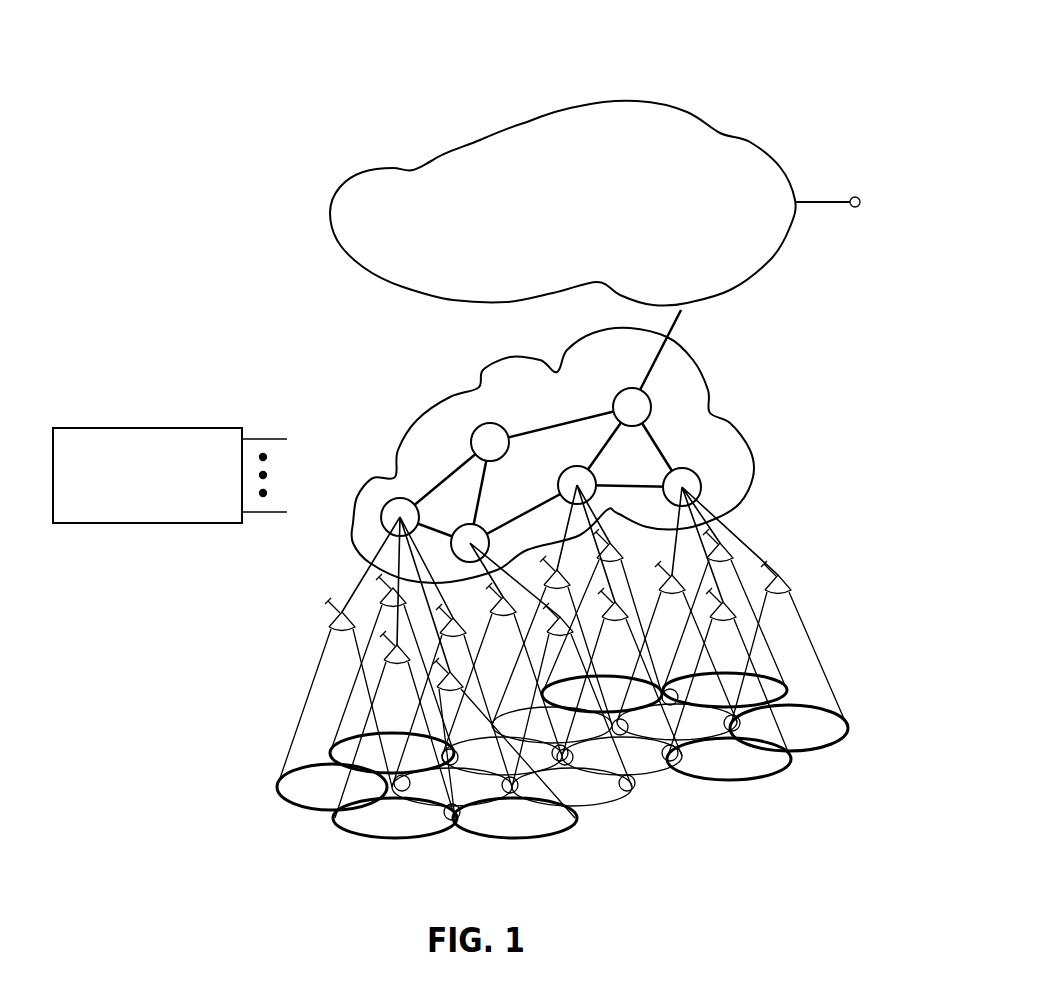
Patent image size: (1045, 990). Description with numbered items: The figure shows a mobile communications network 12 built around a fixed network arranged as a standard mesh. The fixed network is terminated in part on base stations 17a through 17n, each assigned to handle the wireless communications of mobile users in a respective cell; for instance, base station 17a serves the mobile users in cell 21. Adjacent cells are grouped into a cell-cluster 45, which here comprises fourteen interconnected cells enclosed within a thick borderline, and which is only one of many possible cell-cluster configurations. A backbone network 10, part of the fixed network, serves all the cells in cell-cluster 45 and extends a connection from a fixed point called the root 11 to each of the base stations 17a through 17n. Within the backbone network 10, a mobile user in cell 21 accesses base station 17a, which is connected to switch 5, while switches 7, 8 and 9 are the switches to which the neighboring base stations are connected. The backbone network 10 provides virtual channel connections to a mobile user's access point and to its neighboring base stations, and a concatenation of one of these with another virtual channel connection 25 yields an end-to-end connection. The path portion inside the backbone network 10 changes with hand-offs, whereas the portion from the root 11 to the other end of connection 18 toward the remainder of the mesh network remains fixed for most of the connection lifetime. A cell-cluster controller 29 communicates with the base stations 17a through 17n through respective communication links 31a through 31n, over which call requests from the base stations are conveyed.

The mobile communications network 12 is at (483, 37).
The connection 18 is at (850, 197).
The virtual channel connection 25 is at (818, 206).
The backbone network 10 is at (482, 378).
The root 11 is at (626, 387).
The switch 5 is at (406, 497).
The switch 7 is at (484, 527).
The switch 8 is at (577, 465).
The switch 9 is at (701, 484).
The cell-cluster controller 29 is at (122, 425).
The communication link 31a is at (333, 601).
The communication link 31n is at (764, 566).
The base station 17a is at (329, 626).
The base station 17n is at (792, 578).
The cell-cluster 45 is at (515, 765).
The cell 21 is at (280, 788).